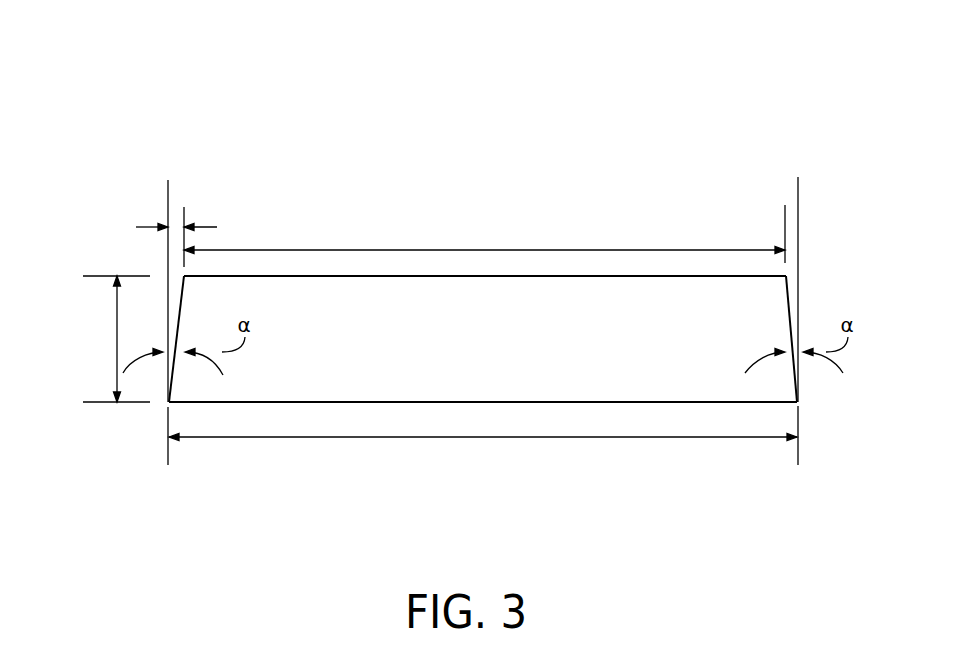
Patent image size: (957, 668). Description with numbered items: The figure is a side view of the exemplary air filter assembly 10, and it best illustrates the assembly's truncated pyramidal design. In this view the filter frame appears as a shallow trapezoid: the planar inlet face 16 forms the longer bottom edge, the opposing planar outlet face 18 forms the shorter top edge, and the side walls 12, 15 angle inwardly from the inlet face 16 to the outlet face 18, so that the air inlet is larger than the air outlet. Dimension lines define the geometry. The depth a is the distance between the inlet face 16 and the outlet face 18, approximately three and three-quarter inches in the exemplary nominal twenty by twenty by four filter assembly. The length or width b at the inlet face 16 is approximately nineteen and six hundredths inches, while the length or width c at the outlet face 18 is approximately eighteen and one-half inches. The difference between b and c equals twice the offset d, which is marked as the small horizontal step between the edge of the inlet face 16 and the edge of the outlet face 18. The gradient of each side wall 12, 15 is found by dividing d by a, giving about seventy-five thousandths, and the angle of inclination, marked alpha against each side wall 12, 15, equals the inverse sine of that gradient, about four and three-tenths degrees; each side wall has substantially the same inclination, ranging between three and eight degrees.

The filter assembly 10 is at (483, 218).
The side wall 12 is at (180, 316).
The side wall 15 is at (787, 316).
The planar inlet face 16 is at (662, 400).
The planar outlet face 18 is at (658, 276).
The depth a is at (116, 335).
The length/width at the inlet face b is at (427, 437).
The length/width at the outlet face c is at (430, 250).
The side wall offset d is at (185, 217).